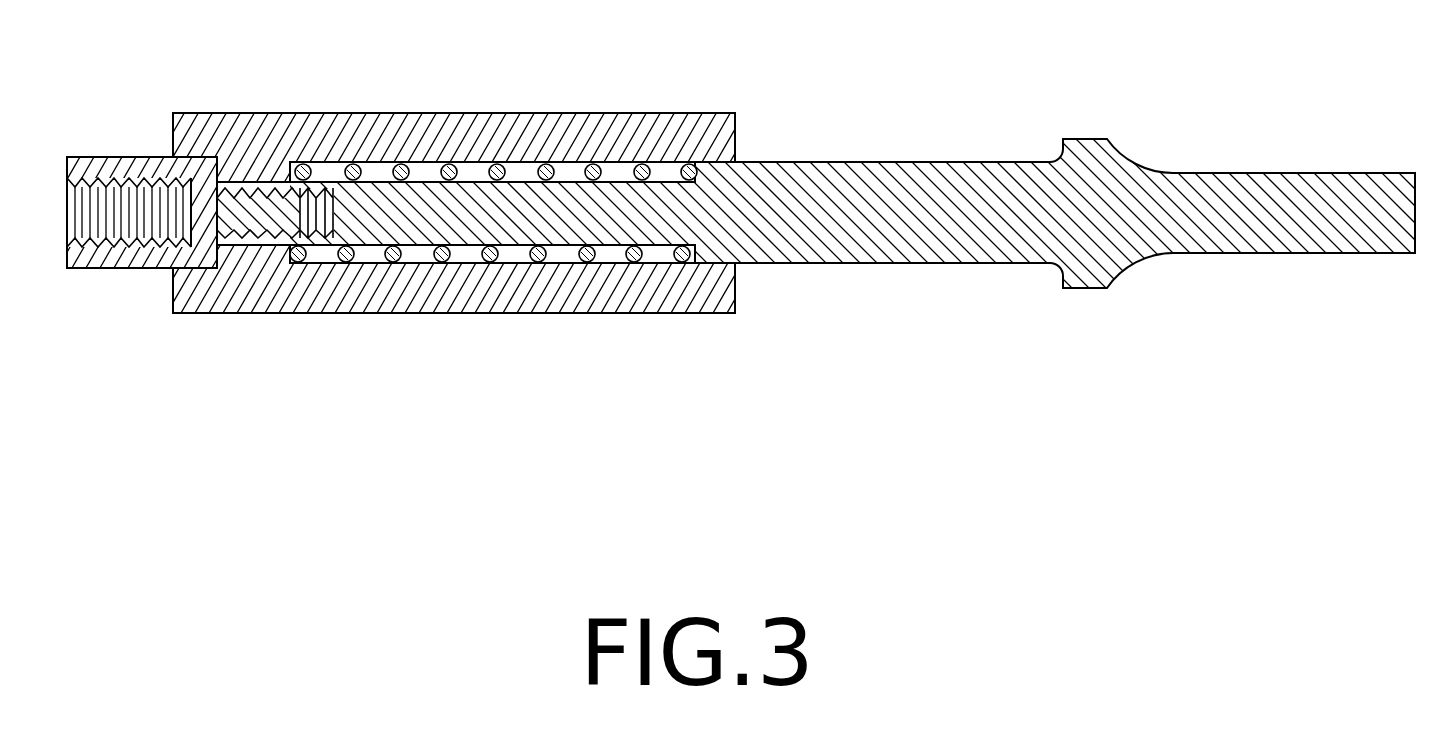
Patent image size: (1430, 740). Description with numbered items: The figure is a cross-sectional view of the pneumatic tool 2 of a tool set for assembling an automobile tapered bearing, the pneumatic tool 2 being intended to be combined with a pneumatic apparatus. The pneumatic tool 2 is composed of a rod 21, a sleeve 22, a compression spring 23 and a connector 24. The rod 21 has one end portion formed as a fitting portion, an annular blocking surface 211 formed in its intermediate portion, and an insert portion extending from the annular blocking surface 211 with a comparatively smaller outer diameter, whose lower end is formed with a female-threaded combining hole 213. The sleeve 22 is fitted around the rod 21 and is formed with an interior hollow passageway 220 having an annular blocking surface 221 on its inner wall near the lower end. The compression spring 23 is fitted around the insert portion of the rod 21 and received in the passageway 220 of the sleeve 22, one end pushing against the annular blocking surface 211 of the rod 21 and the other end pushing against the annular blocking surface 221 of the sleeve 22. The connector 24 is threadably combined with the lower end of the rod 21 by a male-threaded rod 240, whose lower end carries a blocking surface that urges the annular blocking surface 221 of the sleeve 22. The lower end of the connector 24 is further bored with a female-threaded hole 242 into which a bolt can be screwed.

The pneumatic tool 2 is at (715, 282).
The rod 21 is at (808, 240).
The annular blocking surface 211 is at (698, 255).
The female-threaded combining hole 213 is at (268, 188).
The sleeve 22 is at (577, 290).
The interior hollow passageway 220 is at (462, 257).
The annular blocking surface 221 is at (282, 238).
The compression spring 23 is at (637, 253).
The connector 24 is at (185, 172).
The male-threaded rod 240 is at (250, 215).
The female-threaded hole 242 is at (143, 207).